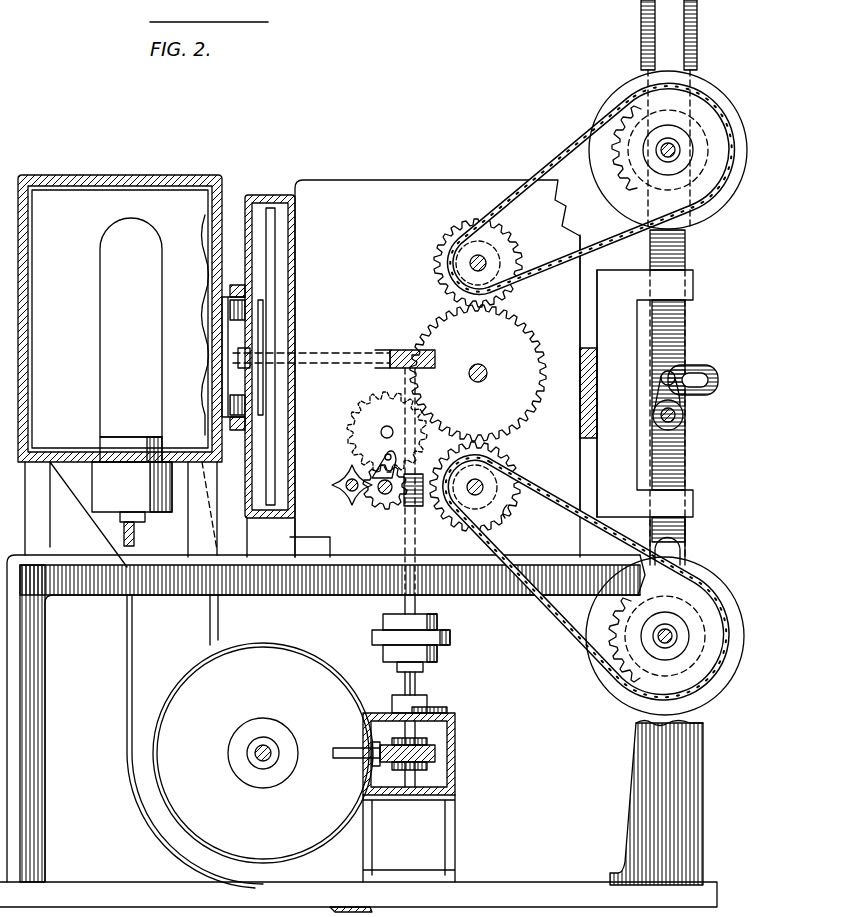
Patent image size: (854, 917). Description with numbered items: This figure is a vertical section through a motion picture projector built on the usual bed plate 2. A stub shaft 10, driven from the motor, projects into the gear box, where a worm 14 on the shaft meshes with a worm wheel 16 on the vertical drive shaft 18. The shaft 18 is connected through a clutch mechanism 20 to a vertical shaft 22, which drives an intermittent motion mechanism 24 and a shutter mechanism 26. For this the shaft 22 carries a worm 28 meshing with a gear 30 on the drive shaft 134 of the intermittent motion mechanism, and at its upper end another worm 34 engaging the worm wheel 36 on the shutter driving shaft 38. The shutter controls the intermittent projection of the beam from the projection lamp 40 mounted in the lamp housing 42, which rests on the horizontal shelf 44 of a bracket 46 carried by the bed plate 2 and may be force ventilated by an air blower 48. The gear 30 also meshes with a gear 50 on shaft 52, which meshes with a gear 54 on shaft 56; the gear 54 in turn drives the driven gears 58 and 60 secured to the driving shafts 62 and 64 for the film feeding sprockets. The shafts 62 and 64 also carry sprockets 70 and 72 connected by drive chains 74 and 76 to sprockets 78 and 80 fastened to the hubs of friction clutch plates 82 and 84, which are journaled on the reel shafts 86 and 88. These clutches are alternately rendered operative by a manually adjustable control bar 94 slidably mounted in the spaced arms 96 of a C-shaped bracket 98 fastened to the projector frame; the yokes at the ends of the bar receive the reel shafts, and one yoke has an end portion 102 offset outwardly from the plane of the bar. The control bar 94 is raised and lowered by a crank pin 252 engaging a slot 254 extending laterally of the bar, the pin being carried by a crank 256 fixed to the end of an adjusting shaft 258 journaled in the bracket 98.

The bed plate 2 is at (494, 893).
The stub shaft 10 is at (342, 748).
The worm 14 is at (440, 752).
The worm wheel 16 is at (455, 728).
The vertical drive shaft 18 is at (420, 685).
The clutch mechanism 20 is at (467, 640).
The vertical shaft 22 is at (400, 606).
The intermittent motion mechanism 24 is at (379, 513).
The shutter mechanism 26 is at (283, 289).
The worm 28 is at (420, 510).
The gear 30 is at (375, 496).
The worm 34 is at (405, 350).
The worm wheel 36 is at (389, 355).
The shutter driving shaft 38 is at (313, 352).
The projection lamp 40 is at (108, 403).
The lamp housing 42 is at (199, 178).
The horizontal shelf 44 is at (86, 578).
The bracket 46 is at (38, 830).
The air blower 48 is at (279, 646).
The gear 50 is at (366, 416).
The shaft 52 is at (386, 426).
The gear 54 is at (522, 422).
The shaft 56 is at (478, 364).
The driven gear 58 is at (500, 467).
The driven gear 60 is at (503, 291).
The driving shaft 62 is at (485, 487).
The driving shaft 64 is at (470, 261).
The sprocket 70 is at (520, 521).
The sprocket 72 is at (505, 240).
The drive chain 74 is at (546, 616).
The drive chain 76 is at (563, 166).
The sprocket 78 is at (701, 578).
The sprocket 80 is at (718, 150).
The friction clutch plate 82 is at (722, 602).
The friction clutch plate 84 is at (728, 124).
The reel shaft 86 is at (672, 640).
The reel shaft 88 is at (672, 145).
The control bar 94 is at (667, 460).
The spaced arms 96 is at (690, 285).
The C-shaped bracket 98 is at (610, 322).
The end portion 102 is at (698, 22).
The drive shaft 134 is at (369, 470).
The crank pin 252 is at (672, 372).
The slot 254 is at (698, 374).
The crank 256 is at (690, 399).
The adjusting shaft 258 is at (680, 415).